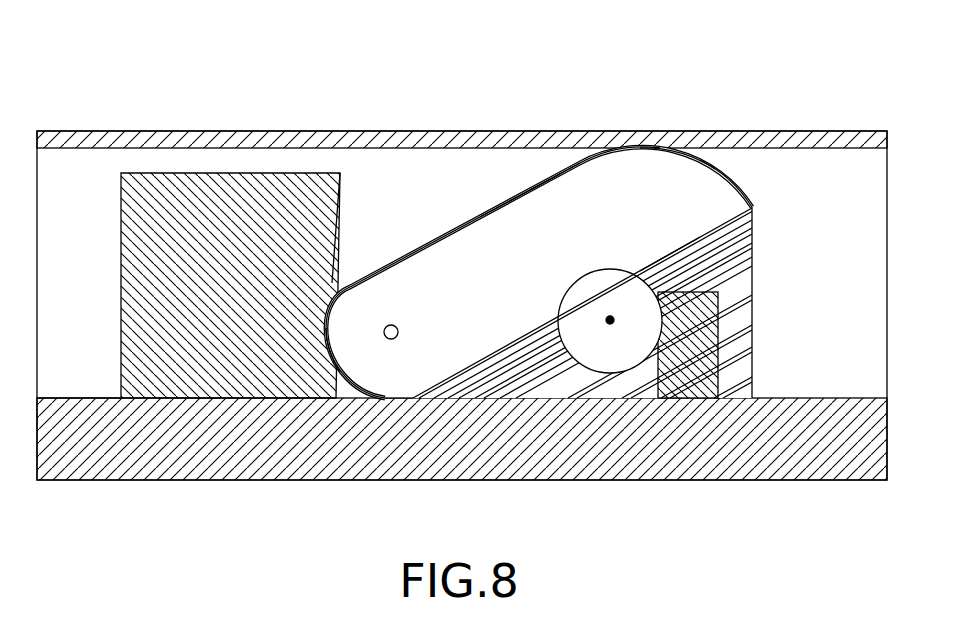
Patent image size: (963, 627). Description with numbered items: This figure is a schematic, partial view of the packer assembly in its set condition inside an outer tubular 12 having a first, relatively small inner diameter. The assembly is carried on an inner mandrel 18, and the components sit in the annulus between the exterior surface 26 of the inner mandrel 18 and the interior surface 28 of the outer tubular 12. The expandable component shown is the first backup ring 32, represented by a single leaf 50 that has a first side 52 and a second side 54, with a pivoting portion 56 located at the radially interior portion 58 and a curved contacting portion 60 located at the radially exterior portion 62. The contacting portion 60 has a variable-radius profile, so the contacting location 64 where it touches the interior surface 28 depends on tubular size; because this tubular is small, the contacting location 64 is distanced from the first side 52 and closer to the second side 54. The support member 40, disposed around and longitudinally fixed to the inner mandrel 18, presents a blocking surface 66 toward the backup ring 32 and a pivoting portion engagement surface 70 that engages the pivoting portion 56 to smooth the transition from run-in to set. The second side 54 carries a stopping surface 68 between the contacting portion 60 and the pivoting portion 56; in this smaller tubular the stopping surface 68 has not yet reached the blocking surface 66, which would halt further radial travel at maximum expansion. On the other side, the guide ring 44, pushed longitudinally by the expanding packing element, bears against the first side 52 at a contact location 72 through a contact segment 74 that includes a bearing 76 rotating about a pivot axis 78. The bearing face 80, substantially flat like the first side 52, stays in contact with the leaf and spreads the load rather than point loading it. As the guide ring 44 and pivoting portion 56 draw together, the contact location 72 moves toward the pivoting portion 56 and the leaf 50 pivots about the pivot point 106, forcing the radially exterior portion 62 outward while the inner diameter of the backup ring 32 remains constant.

The outer tubular 12 is at (316, 131).
The inner mandrel 18 is at (187, 440).
The exterior surface 26 is at (90, 398).
The interior surface 28 is at (388, 148).
The first backup ring 32 is at (537, 240).
The first support member 40 is at (193, 305).
The first guide ring 44 is at (678, 358).
The leaf 50 is at (561, 306).
The first side 52 is at (520, 337).
The second side 54 is at (575, 173).
The pivoting portion 56 is at (397, 357).
The radially interior portion 58 is at (368, 358).
The contacting portion 60 is at (677, 172).
The radially exterior portion 62 is at (687, 197).
The contacting location 64 is at (617, 151).
The blocking surface 66 is at (320, 243).
The stopping surface 68 is at (492, 217).
The pivoting portion engagement surface 70 is at (327, 330).
The contact location 72 is at (605, 285).
The contact segment 74 is at (615, 347).
The bearing 76 is at (620, 307).
The pivot axis 78 is at (610, 324).
The bearing face 80 is at (593, 300).
The pivot point 106 is at (398, 335).